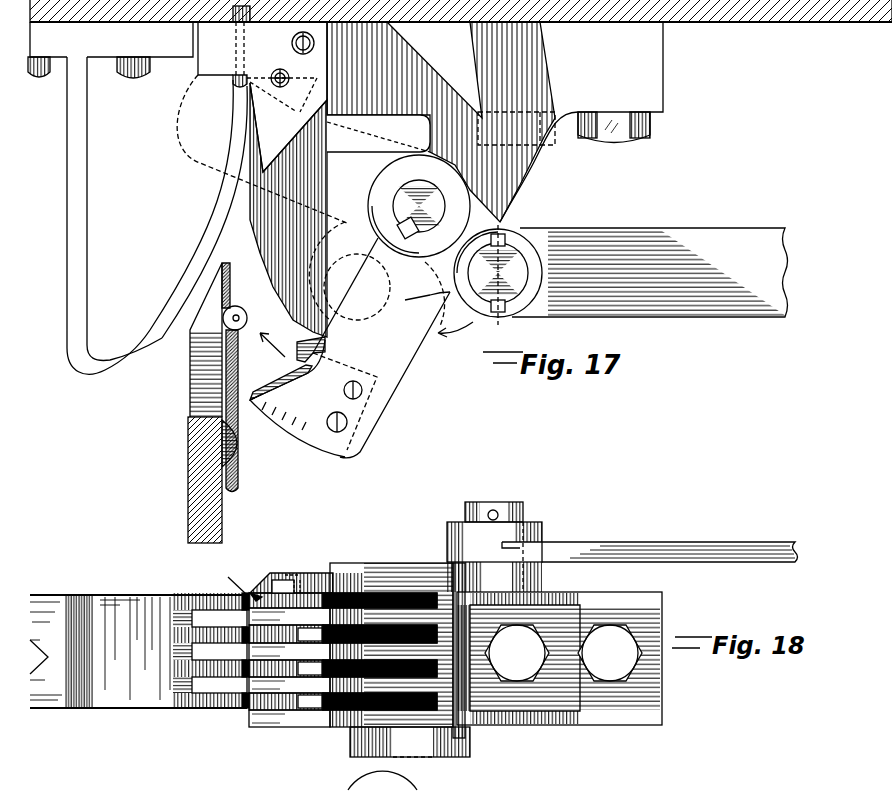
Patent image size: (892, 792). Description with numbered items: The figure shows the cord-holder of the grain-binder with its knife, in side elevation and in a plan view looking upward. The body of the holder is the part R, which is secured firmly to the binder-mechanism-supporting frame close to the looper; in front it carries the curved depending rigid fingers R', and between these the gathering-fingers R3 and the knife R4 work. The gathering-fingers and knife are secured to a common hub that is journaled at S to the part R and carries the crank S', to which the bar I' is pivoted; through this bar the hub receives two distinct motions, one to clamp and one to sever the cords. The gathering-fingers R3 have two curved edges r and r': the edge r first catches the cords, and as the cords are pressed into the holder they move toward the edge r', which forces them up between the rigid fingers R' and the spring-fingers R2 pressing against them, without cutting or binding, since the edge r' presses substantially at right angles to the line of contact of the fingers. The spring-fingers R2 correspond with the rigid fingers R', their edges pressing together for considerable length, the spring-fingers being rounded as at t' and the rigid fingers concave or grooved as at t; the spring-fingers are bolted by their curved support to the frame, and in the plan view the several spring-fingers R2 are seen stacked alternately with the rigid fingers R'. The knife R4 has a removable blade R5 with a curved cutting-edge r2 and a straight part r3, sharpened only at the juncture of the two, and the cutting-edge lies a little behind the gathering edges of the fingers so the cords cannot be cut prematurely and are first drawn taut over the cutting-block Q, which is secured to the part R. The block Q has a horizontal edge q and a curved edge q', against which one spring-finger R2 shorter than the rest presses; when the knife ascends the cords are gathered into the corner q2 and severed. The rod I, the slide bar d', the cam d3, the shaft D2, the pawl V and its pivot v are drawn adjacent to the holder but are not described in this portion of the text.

In FIG. 17, the cutting-block Q is at (262, 97).
In FIG. 18, the cutting-block Q is at (265, 598).
In FIG. 17, the horizontal edge q is at (225, 59).
In FIG. 18, the horizontal edge q is at (232, 582).
In FIG. 17, the curved edge q' is at (262, 149).
In FIG. 17, the corner q2 is at (271, 74).
In FIG. 17, the part R is at (495, 122).
In FIG. 18, the part R is at (559, 672).
In FIG. 17, the rigid fingers R' is at (288, 210).
In FIG. 18, the rigid fingers R' is at (343, 651).
In FIG. 17, the spring-fingers R2 is at (212, 232).
In FIG. 18, the spring-fingers R2 is at (200, 595).
In FIG. 17, the gathering-fingers R3 is at (281, 382).
In FIG. 18, the gathering-fingers R3 is at (289, 667).
In FIG. 17, the knife R4 is at (381, 348).
In FIG. 18, the knife R4 is at (394, 642).
In FIG. 17, the removable blade R5 is at (295, 420).
In FIG. 18, the removable blade R5 is at (272, 580).
In FIG. 17, the curved edge r is at (255, 391).
In FIG. 17, the curved edge r' is at (303, 349).
In FIG. 17, the curved cutting-edge r2 is at (282, 416).
In FIG. 18, the curved cutting-edge r2 is at (258, 583).
In FIG. 17, the straight part r3 is at (316, 356).
In FIG. 17, the journal S is at (419, 206).
In FIG. 18, the journal S is at (409, 758).
In FIG. 17, the crank S' is at (498, 286).
In FIG. 18, the crank S' is at (494, 536).
In FIG. 18, the rod I is at (650, 542).
In FIG. 17, the bar I' is at (650, 272).
In FIG. 17, the slide bar d' is at (189, 340).
In FIG. 17, the cam d3 is at (262, 320).
In FIG. 17, the shaft D2 is at (188, 420).
In FIG. 17, the pawl V is at (240, 367).
In FIG. 17, the pawl pivot v is at (241, 335).
In FIG. 18, the concave or grooved edge t is at (235, 704).
In FIG. 18, the rounded edge t' is at (227, 667).